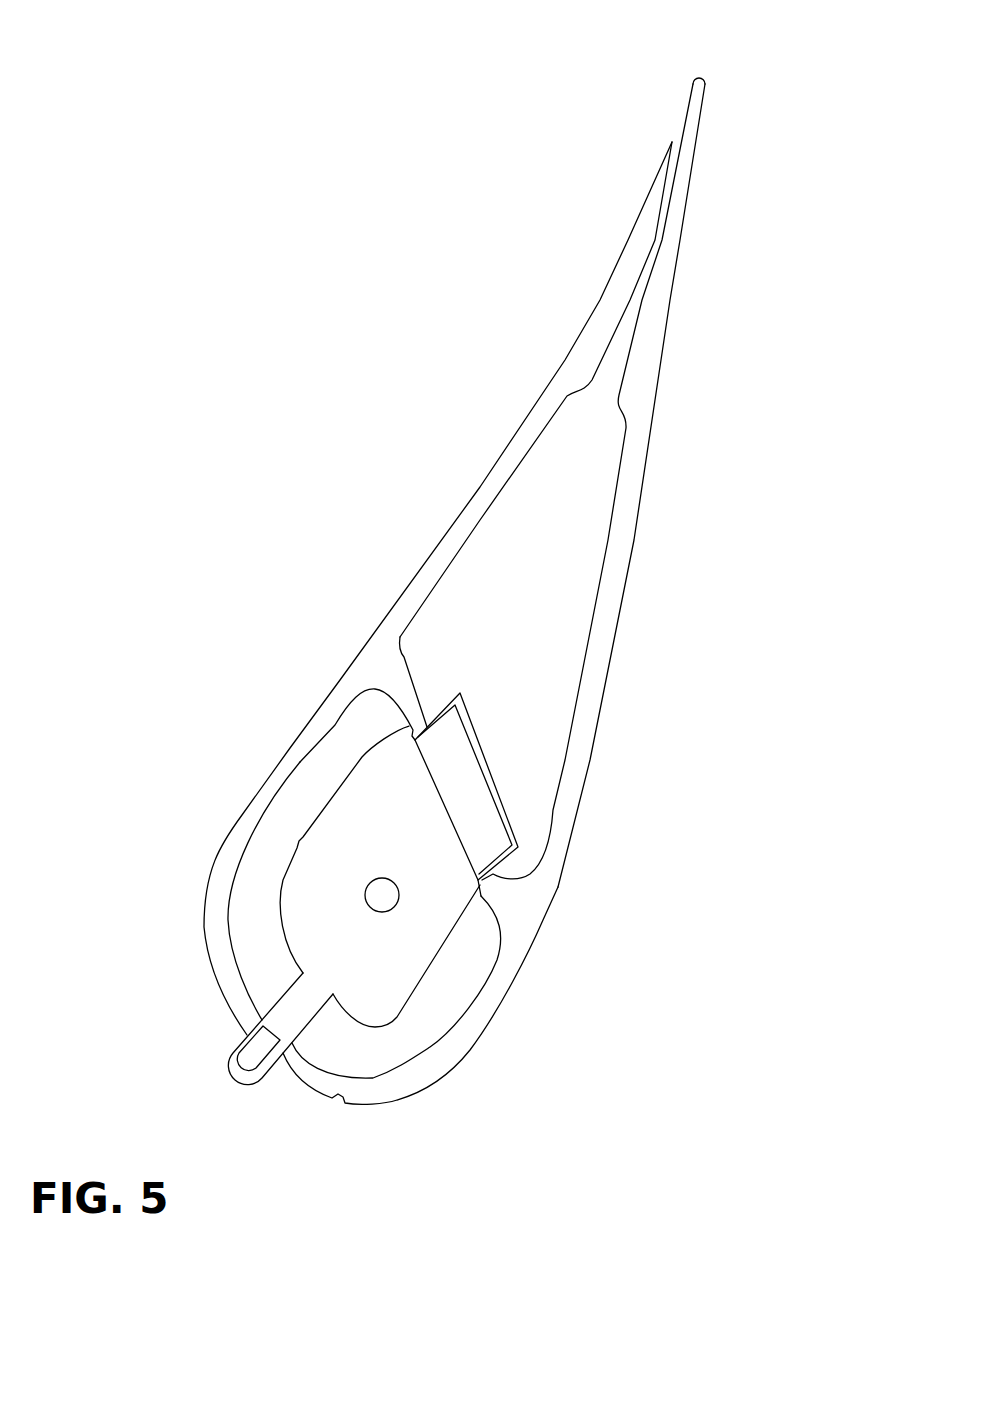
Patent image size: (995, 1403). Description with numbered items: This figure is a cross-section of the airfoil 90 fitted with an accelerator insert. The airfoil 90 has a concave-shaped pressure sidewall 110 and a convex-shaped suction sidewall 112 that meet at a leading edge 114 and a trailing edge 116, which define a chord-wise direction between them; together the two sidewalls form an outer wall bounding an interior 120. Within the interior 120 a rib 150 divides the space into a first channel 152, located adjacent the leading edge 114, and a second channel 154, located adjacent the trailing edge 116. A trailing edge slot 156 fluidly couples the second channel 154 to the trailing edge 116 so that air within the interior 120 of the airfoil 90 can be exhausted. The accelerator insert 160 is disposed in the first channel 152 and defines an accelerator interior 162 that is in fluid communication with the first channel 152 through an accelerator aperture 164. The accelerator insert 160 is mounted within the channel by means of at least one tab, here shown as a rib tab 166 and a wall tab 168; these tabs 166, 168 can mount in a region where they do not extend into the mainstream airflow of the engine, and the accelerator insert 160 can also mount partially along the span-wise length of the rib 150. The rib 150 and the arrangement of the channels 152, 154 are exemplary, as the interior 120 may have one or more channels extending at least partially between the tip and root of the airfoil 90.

The airfoil 90 is at (335, 447).
The pressure sidewall 110 is at (640, 507).
The suction sidewall 112 is at (558, 887).
The leading edge 114 is at (223, 988).
The trailing edge 116 is at (699, 77).
The interior 120 is at (328, 758).
The rib 150 is at (404, 693).
The first channel 152 is at (252, 908).
The second channel 154 is at (562, 556).
The trailing edge slot 156 is at (630, 318).
The accelerator insert 160 is at (295, 853).
The accelerator interior 162 is at (366, 975).
The accelerator aperture 164 is at (383, 900).
The rib tab 166 is at (478, 813).
The wall tab 168 is at (237, 1070).